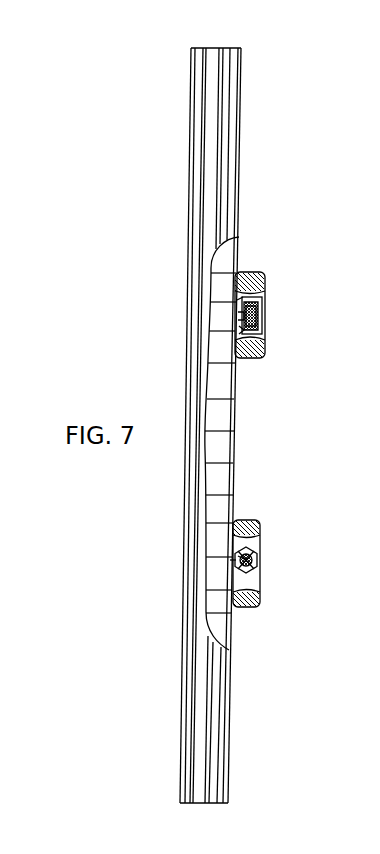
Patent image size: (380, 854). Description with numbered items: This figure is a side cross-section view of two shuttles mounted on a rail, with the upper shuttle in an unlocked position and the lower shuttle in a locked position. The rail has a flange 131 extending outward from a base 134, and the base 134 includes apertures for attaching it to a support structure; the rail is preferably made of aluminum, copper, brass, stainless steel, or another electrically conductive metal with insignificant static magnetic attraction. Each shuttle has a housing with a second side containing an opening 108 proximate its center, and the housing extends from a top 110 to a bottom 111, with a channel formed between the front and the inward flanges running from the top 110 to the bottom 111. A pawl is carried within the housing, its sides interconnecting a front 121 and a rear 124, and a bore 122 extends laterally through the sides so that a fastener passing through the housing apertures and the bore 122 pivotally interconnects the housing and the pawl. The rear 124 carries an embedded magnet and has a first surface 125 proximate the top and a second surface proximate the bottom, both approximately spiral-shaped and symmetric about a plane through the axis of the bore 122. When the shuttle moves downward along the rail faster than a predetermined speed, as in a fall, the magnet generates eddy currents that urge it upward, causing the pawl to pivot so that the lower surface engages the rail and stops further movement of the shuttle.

The opening 108 is at (253, 580).
The top 110 is at (253, 267).
The bottom 111 is at (250, 363).
The front 121 is at (270, 300).
The bore 122 is at (263, 315).
The rear 124 is at (232, 323).
The first surface 125 is at (243, 297).
The flange 131 is at (222, 738).
The base 134 is at (202, 695).